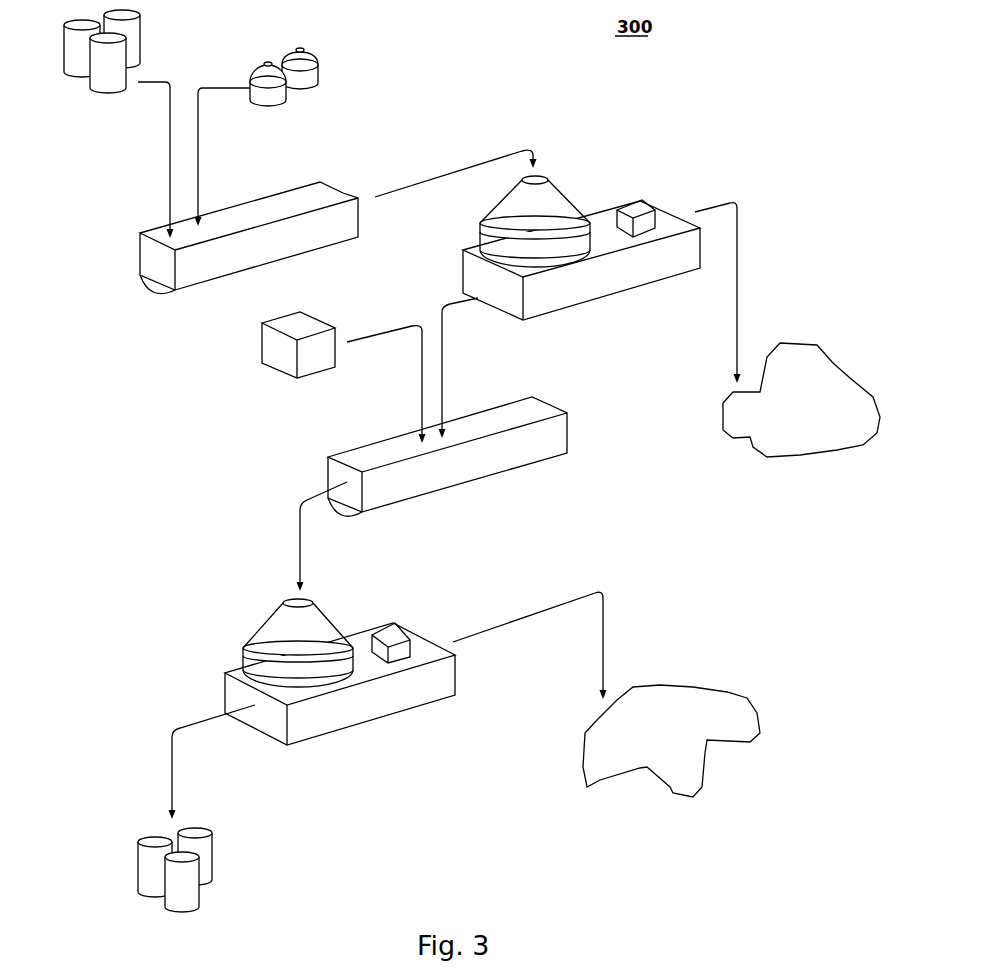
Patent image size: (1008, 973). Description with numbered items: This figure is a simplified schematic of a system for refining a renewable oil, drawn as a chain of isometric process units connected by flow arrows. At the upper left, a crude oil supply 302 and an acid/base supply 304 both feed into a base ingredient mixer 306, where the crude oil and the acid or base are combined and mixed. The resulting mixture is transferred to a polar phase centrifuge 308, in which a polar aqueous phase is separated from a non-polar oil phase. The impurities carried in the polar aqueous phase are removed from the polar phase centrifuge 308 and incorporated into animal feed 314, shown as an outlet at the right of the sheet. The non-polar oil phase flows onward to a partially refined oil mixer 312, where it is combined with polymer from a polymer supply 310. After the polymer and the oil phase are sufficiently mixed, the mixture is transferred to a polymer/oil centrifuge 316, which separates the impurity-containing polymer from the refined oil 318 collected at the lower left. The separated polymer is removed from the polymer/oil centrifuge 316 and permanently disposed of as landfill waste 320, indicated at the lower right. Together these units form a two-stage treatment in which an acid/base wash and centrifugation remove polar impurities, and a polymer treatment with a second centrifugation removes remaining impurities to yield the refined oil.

The crude oil supply 302 is at (140, 22).
The acid/base supply 304 is at (318, 67).
The base ingredient mixer 306 is at (330, 185).
The polar phase centrifuge 308 is at (607, 210).
The polymer supply 310 is at (322, 320).
The partially refined oil mixer 312 is at (567, 440).
The animal feed 314 is at (833, 362).
The polymer/oil centrifuge 316 is at (365, 633).
The refined oil 318 is at (217, 855).
The landfill waste 320 is at (757, 712).